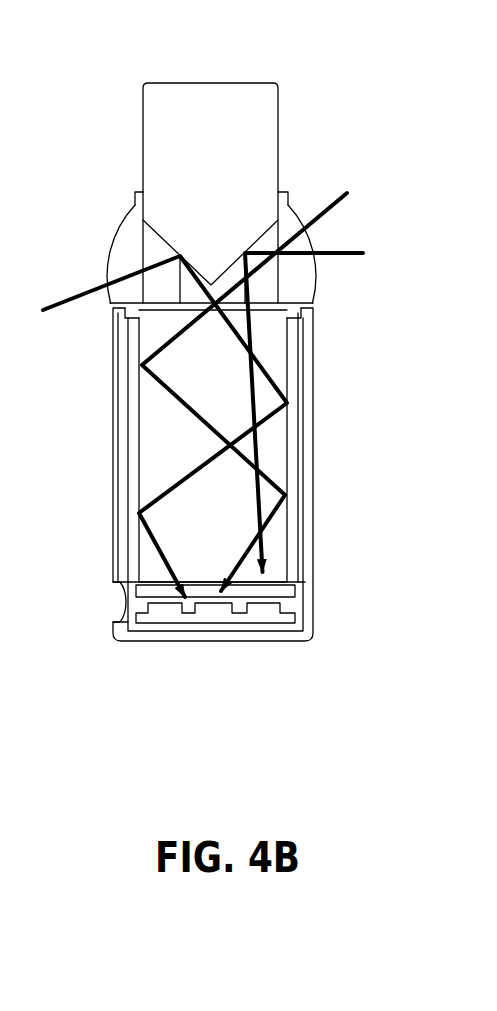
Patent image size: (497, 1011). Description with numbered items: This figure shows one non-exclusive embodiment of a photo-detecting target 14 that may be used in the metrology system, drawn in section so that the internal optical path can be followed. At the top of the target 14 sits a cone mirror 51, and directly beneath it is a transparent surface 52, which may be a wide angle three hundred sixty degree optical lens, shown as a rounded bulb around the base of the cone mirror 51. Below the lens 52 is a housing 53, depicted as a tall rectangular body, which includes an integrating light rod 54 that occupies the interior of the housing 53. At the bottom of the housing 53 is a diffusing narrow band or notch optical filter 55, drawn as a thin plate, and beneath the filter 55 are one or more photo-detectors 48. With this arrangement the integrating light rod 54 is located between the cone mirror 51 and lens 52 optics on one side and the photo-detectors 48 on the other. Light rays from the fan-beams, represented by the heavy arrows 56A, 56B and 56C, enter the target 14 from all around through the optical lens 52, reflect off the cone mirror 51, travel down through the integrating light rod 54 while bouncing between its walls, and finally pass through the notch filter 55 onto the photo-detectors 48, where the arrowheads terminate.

The photo-detecting target 14 is at (86, 715).
The photo-detectors 48 is at (166, 610).
The cone mirror 51 is at (255, 83).
The transparent surface 52 is at (108, 243).
The housing 53 is at (313, 473).
The integrating light rod 54 is at (265, 362).
The notch optical filter 55 is at (291, 587).
The light ray arrow 56A is at (336, 197).
The light ray arrow 56B is at (352, 253).
The light ray arrow 56C is at (63, 305).